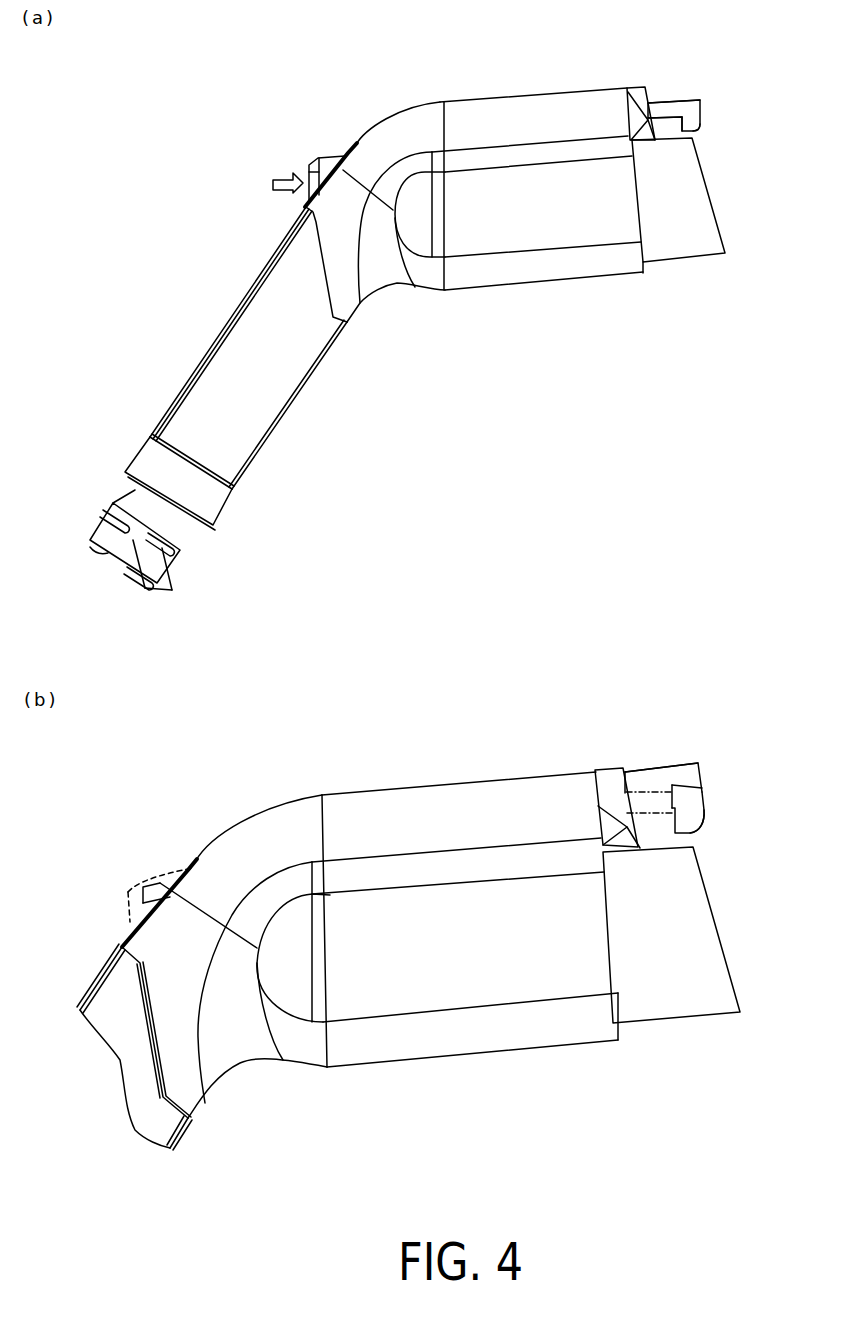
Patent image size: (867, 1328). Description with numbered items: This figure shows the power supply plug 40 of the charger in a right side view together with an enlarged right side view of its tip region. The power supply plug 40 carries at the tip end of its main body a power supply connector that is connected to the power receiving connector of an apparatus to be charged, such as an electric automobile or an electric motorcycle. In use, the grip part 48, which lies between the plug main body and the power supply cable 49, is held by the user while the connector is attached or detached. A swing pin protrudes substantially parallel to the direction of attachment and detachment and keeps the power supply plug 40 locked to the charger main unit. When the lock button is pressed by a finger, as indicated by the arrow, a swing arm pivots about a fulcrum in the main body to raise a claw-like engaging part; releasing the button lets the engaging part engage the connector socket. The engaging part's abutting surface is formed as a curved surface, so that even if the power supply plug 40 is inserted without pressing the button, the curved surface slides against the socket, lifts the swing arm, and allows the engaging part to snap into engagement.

The power supply plug 40 is at (509, 295).
The grip part 48 is at (263, 387).
The power supply cable 49 is at (170, 565).